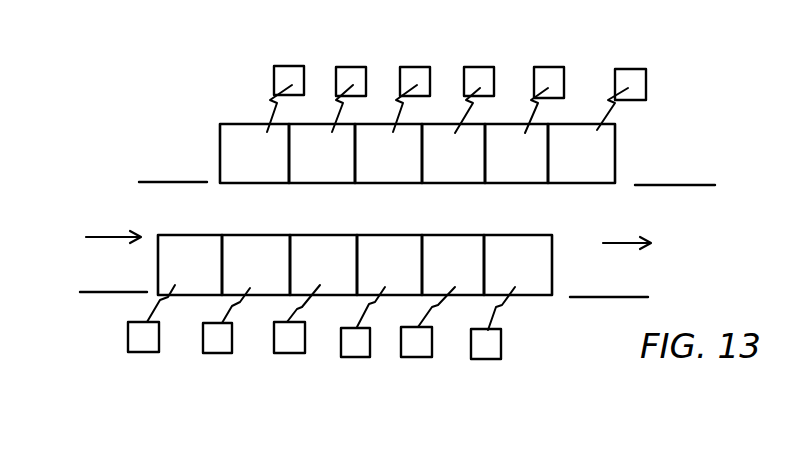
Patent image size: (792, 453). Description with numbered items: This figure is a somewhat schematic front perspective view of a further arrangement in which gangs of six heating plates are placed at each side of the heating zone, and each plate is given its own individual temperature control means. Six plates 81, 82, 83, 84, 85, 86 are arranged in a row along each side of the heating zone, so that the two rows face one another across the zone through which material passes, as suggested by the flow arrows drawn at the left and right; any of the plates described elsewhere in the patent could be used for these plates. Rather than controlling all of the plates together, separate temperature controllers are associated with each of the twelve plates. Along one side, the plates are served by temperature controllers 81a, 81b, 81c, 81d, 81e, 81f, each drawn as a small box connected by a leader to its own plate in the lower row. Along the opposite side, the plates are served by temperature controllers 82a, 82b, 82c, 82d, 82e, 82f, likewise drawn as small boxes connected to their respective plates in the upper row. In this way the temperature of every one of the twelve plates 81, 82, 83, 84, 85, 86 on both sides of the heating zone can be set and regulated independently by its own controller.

The plate 81 is at (253, 183).
The plate 82 is at (311, 183).
The plate 83 is at (378, 183).
The plate 84 is at (445, 183).
The plate 85 is at (515, 183).
The plate 86 is at (580, 183).
The temperature controller 81a is at (137, 347).
The temperature controller 81b is at (218, 351).
The temperature controller 81c is at (291, 348).
The temperature controller 81d is at (362, 352).
The temperature controller 81e is at (420, 352).
The temperature controller 81f is at (498, 353).
The temperature controller 82a is at (291, 66).
The temperature controller 82b is at (355, 67).
The temperature controller 82c is at (418, 67).
The temperature controller 82d is at (480, 67).
The temperature controller 82e is at (550, 67).
The temperature controller 82f is at (630, 69).